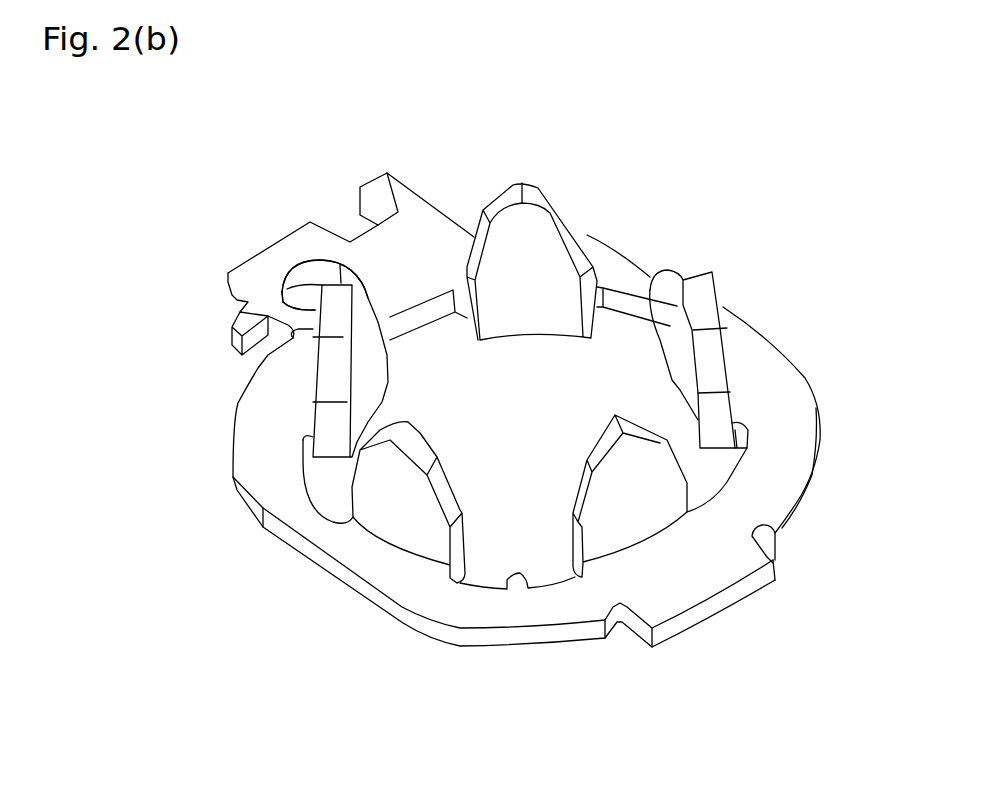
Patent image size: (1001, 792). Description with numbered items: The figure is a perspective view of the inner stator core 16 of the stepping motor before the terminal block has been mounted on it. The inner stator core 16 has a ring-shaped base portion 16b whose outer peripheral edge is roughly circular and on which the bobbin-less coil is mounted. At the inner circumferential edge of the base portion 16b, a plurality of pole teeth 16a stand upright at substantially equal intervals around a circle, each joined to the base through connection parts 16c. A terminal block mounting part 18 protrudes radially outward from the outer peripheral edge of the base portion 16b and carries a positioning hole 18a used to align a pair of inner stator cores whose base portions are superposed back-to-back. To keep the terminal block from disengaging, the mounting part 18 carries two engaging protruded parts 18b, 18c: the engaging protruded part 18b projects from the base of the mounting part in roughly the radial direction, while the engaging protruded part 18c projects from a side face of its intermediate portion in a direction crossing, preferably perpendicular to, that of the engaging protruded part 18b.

The inner stator core 16 is at (282, 118).
The pole teeth 16a is at (530, 260).
The base portion 16b is at (767, 413).
The connection parts 16c is at (730, 477).
The terminal block mounting part 18 is at (330, 223).
The positioning hole 18a is at (307, 267).
The engaging protruded part 18b is at (393, 192).
The engaging protruded part 18c is at (243, 323).